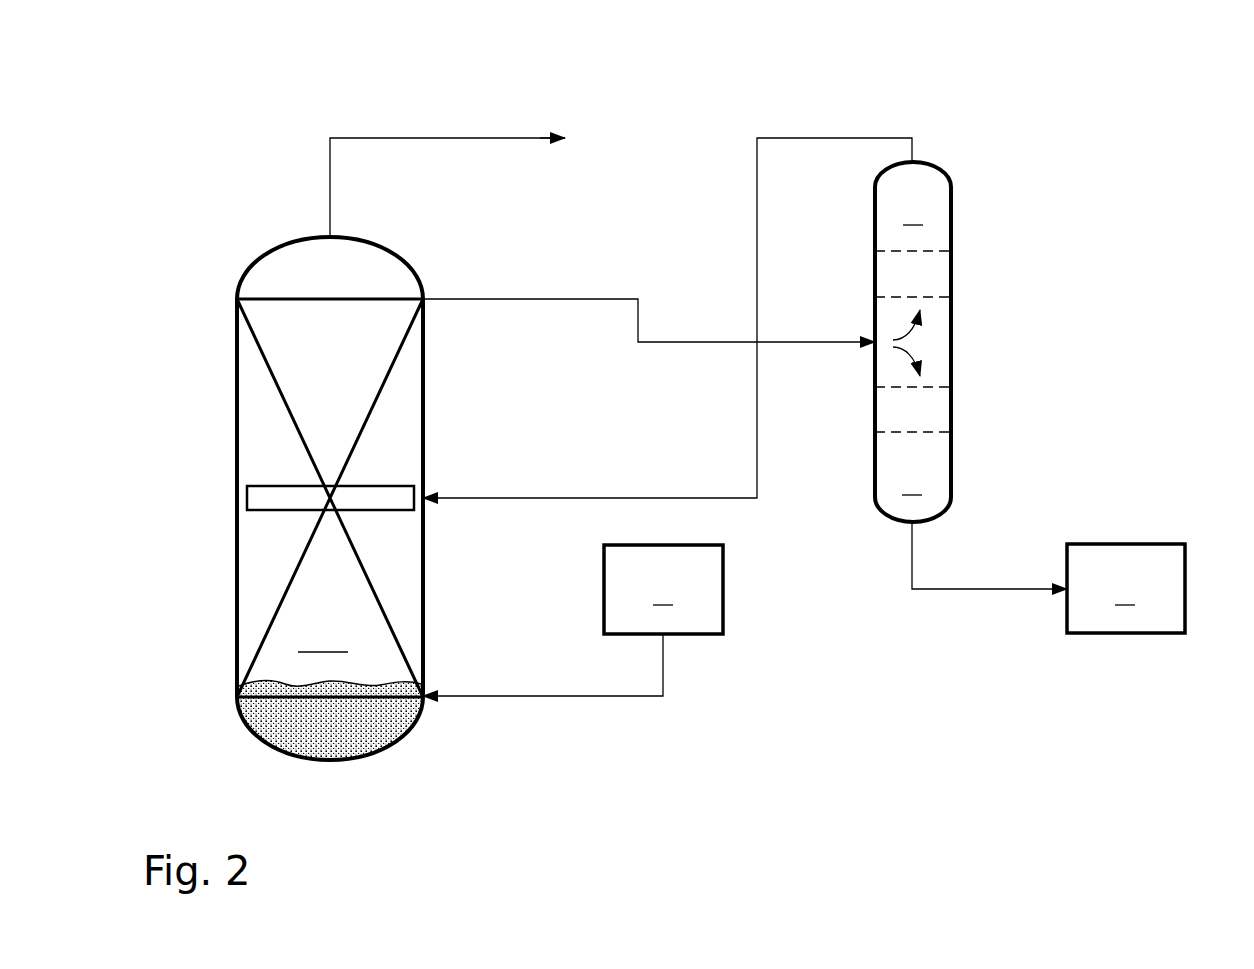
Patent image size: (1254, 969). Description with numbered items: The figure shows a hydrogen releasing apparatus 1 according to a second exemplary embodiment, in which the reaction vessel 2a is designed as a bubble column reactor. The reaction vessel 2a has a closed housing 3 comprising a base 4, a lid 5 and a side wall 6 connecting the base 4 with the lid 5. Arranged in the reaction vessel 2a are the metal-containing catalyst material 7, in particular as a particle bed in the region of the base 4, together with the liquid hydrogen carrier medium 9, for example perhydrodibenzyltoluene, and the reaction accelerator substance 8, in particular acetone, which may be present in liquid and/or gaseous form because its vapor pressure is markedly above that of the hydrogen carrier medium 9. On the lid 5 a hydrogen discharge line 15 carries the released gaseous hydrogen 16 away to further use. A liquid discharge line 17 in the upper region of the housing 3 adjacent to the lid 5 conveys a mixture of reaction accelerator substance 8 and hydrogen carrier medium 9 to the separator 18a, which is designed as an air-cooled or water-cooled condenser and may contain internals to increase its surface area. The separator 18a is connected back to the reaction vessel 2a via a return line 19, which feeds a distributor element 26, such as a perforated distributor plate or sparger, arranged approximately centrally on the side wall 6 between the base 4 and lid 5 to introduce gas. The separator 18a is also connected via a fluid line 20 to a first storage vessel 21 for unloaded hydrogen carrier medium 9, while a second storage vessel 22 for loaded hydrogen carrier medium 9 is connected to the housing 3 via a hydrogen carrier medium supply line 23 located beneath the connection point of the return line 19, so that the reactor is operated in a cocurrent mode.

The hydrogen releasing apparatus 1 is at (1165, 300).
The reaction vessel 2a is at (282, 492).
The housing 3 is at (255, 404).
The base 4 is at (262, 745).
The lid 5 is at (275, 250).
The side wall 6 is at (237, 440).
The catalyst material 7 is at (253, 710).
The reaction accelerator substance 8 is at (913, 209).
The hydrogen carrier medium 9 is at (716, 557).
The hydrogen discharge line 15 is at (424, 138).
The gaseous hydrogen 16 is at (574, 139).
The liquid discharge line 17 is at (622, 297).
The separator 18a is at (999, 342).
The return line 19 is at (812, 138).
The fluid line 20 is at (967, 590).
The first storage vessel 21 is at (1125, 614).
The second storage vessel 22 is at (688, 620).
The hydrogen carrier medium supply line 23 is at (571, 697).
The distributor element 26 is at (257, 497).